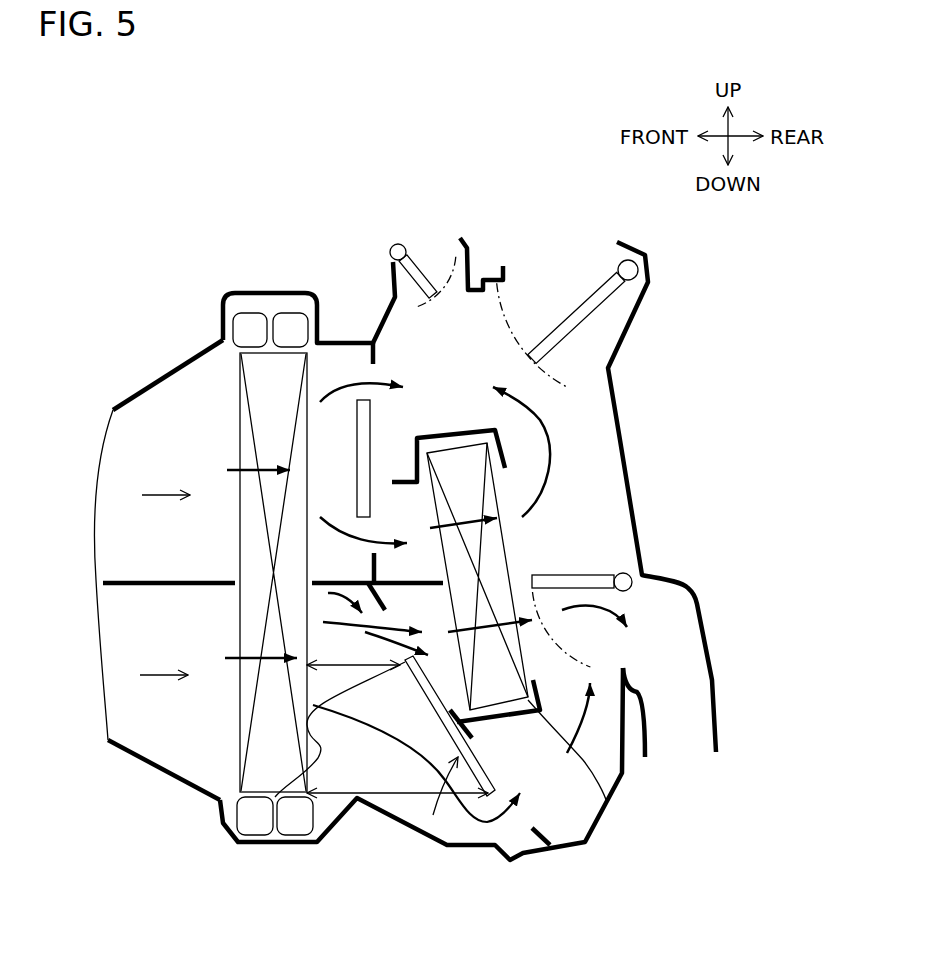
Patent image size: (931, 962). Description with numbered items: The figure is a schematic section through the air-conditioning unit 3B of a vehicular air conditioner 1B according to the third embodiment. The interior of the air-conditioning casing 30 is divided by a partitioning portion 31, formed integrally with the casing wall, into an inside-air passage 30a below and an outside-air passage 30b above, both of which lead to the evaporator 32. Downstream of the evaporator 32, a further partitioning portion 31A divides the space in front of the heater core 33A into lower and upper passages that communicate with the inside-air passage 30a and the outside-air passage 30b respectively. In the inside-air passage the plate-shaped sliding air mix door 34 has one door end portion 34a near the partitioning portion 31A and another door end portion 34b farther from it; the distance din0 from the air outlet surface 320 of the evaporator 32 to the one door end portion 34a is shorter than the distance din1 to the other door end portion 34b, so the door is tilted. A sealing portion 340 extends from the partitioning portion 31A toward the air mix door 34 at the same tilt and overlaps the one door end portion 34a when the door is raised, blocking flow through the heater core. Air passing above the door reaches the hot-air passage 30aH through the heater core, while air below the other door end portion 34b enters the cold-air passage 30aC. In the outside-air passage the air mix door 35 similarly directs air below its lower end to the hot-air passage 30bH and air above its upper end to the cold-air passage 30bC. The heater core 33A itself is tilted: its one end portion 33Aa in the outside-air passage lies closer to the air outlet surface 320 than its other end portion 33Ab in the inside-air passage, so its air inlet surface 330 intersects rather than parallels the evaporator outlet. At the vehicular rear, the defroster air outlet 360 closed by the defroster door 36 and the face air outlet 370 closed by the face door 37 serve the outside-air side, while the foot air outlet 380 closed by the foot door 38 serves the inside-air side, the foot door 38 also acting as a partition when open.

The vehicular air conditioner 1B is at (400, 222).
The air-conditioning unit 3B is at (316, 295).
The air-conditioning casing 30 is at (177, 785).
The inside-air passage 30a is at (152, 745).
The outside-air passage 30b is at (135, 418).
The cold-air passage 30aC is at (500, 835).
The hot-air passage 30aH is at (540, 650).
The cold-air passage 30bC is at (375, 373).
The hot-air passage 30bH is at (522, 530).
The partitioning portion 31 is at (140, 583).
The partitioning portion 31A is at (325, 582).
The evaporator 32 is at (240, 395).
The air outlet surface 320 is at (275, 797).
The heater core 33A is at (505, 700).
The one end portion 33Aa is at (450, 437).
The other end portion 33Ab is at (607, 803).
The air inlet surface 330 is at (443, 580).
The air mix door 34 is at (437, 800).
The one door end portion 34a is at (405, 668).
The other door end portion 34b is at (488, 803).
The sealing portion 340 is at (323, 588).
The air mix door 35 is at (355, 446).
The defroster door 36 is at (410, 268).
The defroster air outlet 360 is at (460, 238).
The face door 37 is at (577, 320).
The face air outlet 370 is at (617, 242).
The foot door 38 is at (578, 582).
The foot air outlet 380 is at (627, 668).
The distance din0 is at (345, 665).
The distance din1 is at (340, 793).